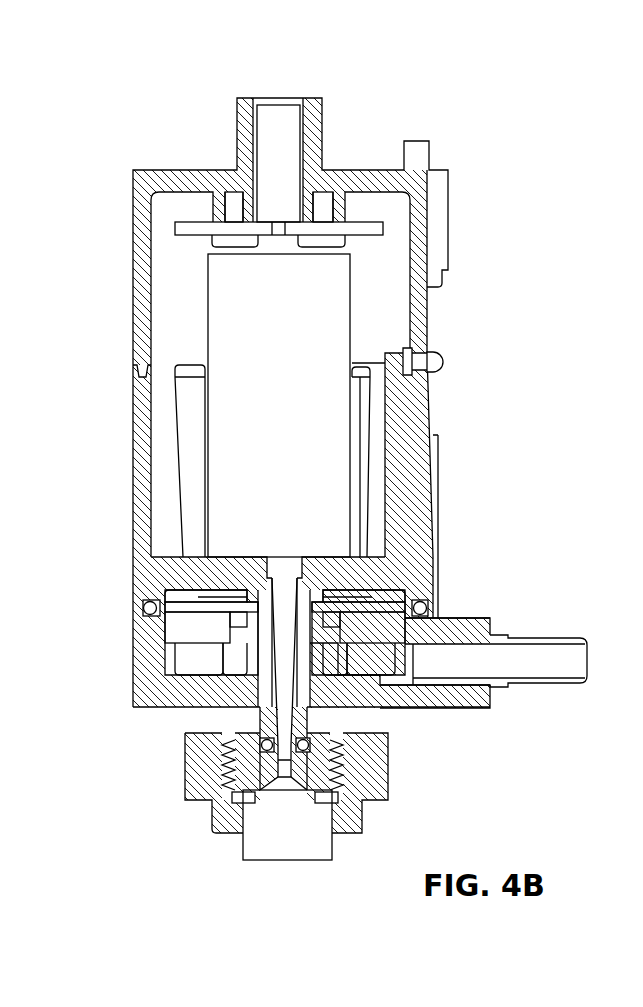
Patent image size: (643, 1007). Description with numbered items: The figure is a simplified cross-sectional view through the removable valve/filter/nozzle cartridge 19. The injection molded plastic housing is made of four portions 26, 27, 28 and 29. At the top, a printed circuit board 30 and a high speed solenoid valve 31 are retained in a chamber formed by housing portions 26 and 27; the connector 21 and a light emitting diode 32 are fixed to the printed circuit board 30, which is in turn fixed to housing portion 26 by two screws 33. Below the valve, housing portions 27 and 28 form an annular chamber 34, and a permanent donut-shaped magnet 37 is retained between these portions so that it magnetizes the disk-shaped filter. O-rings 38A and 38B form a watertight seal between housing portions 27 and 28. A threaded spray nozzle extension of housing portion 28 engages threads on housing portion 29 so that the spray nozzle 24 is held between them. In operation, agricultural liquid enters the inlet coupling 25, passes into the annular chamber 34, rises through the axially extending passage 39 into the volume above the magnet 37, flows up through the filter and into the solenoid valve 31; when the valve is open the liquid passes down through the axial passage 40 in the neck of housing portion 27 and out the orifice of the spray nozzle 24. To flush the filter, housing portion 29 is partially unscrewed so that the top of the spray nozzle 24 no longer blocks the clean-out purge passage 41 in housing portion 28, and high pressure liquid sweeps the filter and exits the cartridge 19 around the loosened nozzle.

The removable valve/filter/nozzle cartridge 19 is at (494, 216).
The connector 21 is at (273, 127).
The spray nozzle 24 is at (265, 847).
The inlet coupling 25 is at (545, 638).
The housing portion 26 is at (133, 322).
The housing portion 27 is at (133, 440).
The housing portion 28 is at (133, 647).
The housing portion 29 is at (210, 797).
The printed circuit board 30 is at (365, 227).
The high speed solenoid valve 31 is at (291, 430).
The light emitting diode 32 is at (442, 360).
The screws 33 is at (242, 197).
The annular chamber 34 is at (193, 658).
The permanent donut-shaped magnet 37 is at (208, 642).
The O-ring 38A is at (146, 609).
The O-ring 38B is at (262, 748).
The passage 39 is at (240, 660).
The axial passage 40 is at (285, 668).
The clean-out purge passage 41 is at (318, 707).